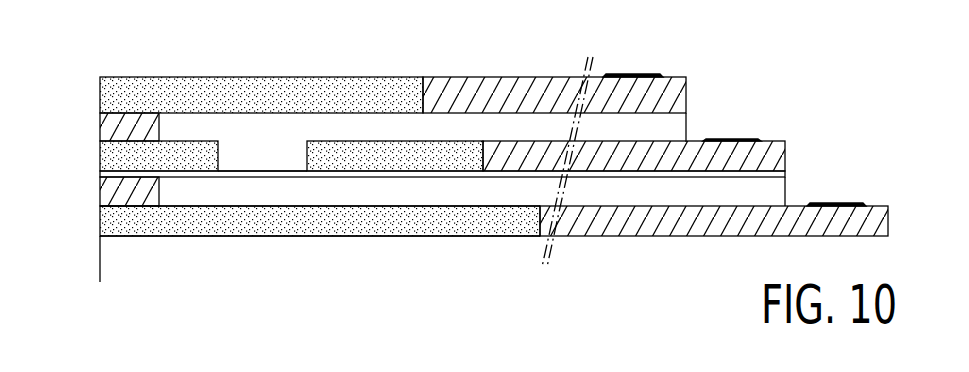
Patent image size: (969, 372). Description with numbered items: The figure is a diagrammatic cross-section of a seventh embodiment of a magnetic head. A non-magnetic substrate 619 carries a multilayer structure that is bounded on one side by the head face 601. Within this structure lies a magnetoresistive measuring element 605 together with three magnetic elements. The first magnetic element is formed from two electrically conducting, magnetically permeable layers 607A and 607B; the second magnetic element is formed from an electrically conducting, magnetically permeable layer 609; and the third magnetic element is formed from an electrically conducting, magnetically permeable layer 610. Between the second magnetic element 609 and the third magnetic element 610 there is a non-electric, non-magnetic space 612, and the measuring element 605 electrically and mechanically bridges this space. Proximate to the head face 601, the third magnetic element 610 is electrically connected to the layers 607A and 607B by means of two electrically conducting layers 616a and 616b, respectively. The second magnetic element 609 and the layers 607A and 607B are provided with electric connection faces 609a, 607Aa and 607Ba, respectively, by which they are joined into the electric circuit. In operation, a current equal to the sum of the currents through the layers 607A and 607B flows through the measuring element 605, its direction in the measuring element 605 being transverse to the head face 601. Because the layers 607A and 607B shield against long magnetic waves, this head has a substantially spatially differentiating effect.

The head face 601 is at (100, 214).
The magnetoresistive measuring element 605 is at (282, 172).
The electrically conducting, magnetically permeable layer 607A is at (428, 225).
The electric connection face 607Aa is at (843, 203).
The electrically conducting, magnetically permeable layer 607B is at (237, 92).
The electric connection face 607Ba is at (635, 72).
The second magnetic element 609 is at (392, 150).
The electric connection face 609a is at (737, 140).
The third magnetic element 610 is at (183, 150).
The non-electric, non-magnetic space 612 is at (237, 158).
The electrically conducting layer 616a is at (107, 190).
The electrically conducting layer 616b is at (107, 127).
The non-magnetic substrate 619 is at (118, 250).